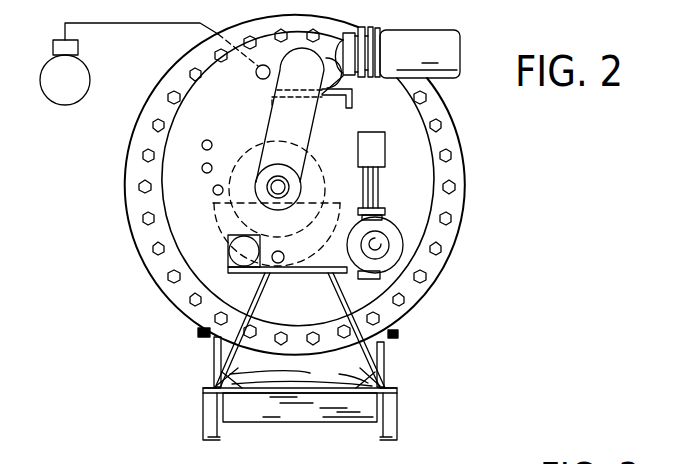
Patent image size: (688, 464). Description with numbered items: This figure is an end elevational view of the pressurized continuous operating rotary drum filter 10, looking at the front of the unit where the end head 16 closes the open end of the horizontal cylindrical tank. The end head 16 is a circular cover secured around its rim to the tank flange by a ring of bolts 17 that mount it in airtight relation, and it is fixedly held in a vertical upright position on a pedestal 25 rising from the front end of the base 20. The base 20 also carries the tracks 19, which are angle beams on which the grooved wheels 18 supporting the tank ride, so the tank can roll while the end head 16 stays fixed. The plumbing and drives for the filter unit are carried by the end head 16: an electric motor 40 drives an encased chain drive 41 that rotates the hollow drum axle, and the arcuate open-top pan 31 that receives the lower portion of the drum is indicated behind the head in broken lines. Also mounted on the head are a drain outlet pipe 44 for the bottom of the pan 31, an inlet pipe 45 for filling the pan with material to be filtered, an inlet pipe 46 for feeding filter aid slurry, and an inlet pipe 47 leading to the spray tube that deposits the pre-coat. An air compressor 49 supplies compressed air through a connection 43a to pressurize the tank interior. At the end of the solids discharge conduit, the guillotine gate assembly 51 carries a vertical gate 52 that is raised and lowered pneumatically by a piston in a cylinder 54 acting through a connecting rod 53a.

The pressurized continuous operating rotary drum filter 10 is at (460, 135).
The end head 16 is at (433, 200).
The bolts 17 is at (438, 121).
The wheels 18 is at (282, 375).
The tracks 19 is at (340, 390).
The base 20 is at (339, 422).
The pedestal 25 is at (380, 328).
The pan 31 is at (218, 214).
The electric motor 40 is at (428, 30).
The encased chain drive 41 is at (313, 155).
The cable connection 43a is at (263, 65).
The drain outlet pipe 44 is at (282, 263).
The inlet pipe 45 is at (207, 140).
The inlet pipe 46 is at (204, 163).
The inlet pipe 47 is at (213, 189).
The air compressor 49 is at (76, 84).
The guillotine gate assembly 51 is at (363, 277).
The gate 52 is at (380, 240).
The connecting rod 53a is at (372, 192).
The cylinder 54 is at (372, 132).